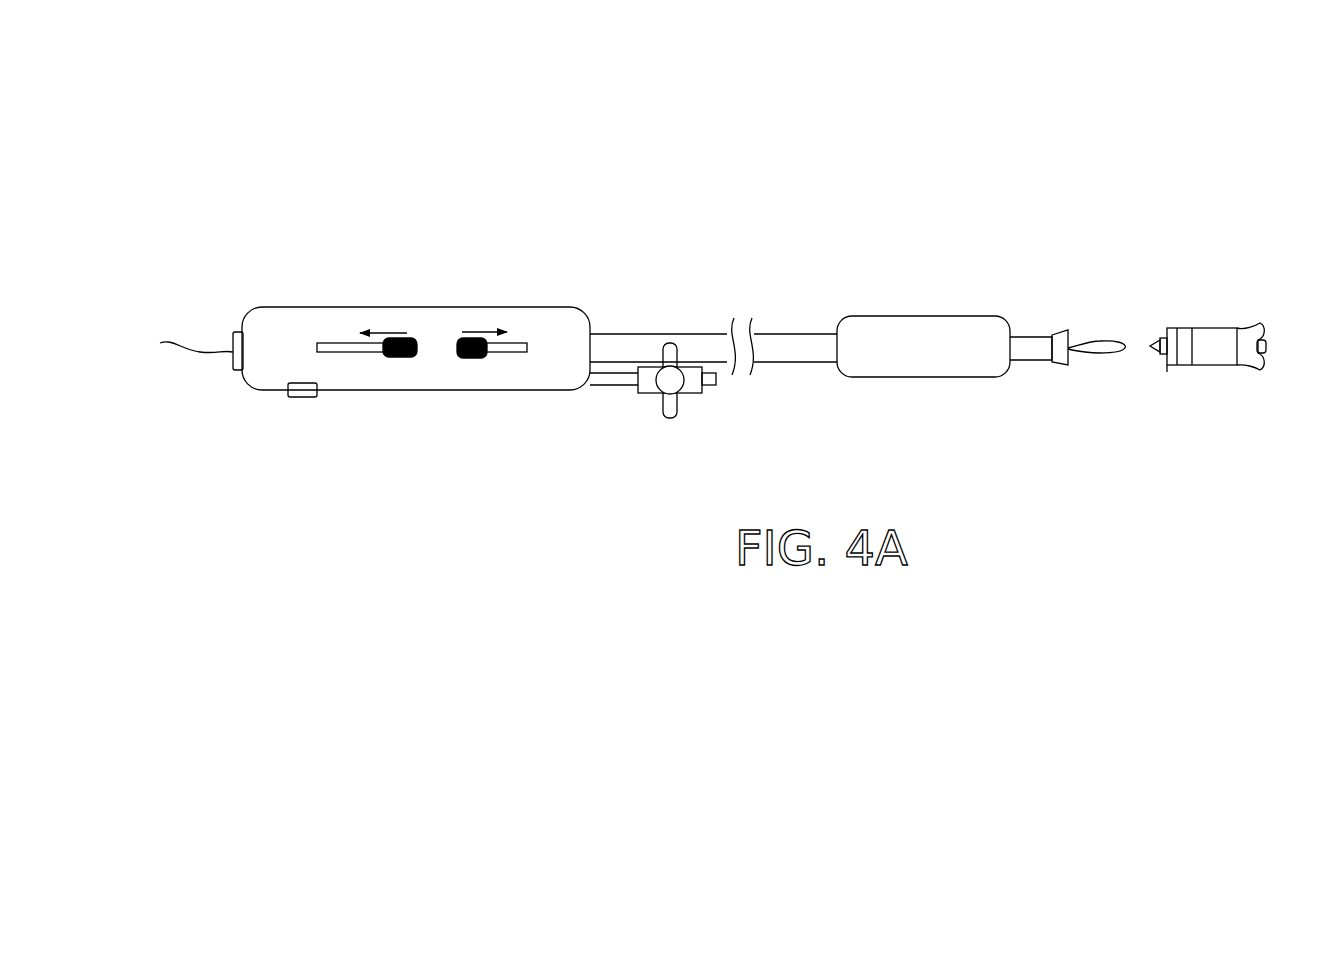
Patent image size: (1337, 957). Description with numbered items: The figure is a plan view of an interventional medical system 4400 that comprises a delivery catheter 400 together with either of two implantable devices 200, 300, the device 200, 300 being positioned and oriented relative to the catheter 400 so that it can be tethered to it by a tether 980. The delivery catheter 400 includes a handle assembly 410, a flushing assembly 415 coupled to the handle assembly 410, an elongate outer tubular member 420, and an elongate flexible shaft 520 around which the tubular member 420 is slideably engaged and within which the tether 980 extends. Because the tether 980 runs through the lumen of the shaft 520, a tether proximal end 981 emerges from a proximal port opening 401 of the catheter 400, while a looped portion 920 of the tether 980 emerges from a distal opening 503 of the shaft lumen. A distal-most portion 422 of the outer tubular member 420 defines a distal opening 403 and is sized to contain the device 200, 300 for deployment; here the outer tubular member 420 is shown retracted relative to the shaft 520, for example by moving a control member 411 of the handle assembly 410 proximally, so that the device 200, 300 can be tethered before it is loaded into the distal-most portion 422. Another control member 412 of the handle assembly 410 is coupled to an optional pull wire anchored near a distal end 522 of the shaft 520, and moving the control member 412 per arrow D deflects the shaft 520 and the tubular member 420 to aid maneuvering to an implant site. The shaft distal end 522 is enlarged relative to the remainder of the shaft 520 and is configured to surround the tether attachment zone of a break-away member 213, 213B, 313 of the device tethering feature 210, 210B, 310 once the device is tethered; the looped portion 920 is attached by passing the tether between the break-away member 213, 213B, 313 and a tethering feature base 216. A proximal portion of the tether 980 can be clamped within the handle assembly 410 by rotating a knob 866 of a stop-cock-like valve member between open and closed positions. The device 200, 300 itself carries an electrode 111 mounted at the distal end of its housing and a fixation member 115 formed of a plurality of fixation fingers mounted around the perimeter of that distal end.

The interventional medical system 4400 is at (672, 126).
The delivery catheter 400 is at (596, 226).
The handle assembly 410 is at (423, 270).
The tether 980 is at (207, 298).
The tether proximal end 981 is at (181, 347).
The proximal port opening 401 is at (233, 355).
The knob 866 is at (300, 398).
The control member 412 is at (398, 358).
The control member 411 is at (475, 359).
The elongate outer tubular member 420 is at (790, 345).
The flushing assembly 415 is at (631, 433).
The distal-most portion 422 is at (905, 361).
The distal opening 403 is at (1025, 336).
The distal end 522 is at (1064, 340).
The elongate flexible shaft 520 is at (1030, 366).
The distal opening 503 is at (1068, 362).
The looped portion 920 is at (1095, 353).
The device 200 is at (1226, 349).
The device 300 is at (1210, 246).
The device tethering feature 210 is at (1226, 379).
The device tethering feature 210B is at (1226, 379).
The device tethering feature 310 is at (1160, 392).
The break-away member 213 is at (1192, 309).
The break-away member 213B is at (1192, 309).
The break-away member 313 is at (1142, 334).
The tethering feature base 216 is at (1165, 373).
The fixation member 115 is at (1258, 313).
The electrode 111 is at (1266, 347).